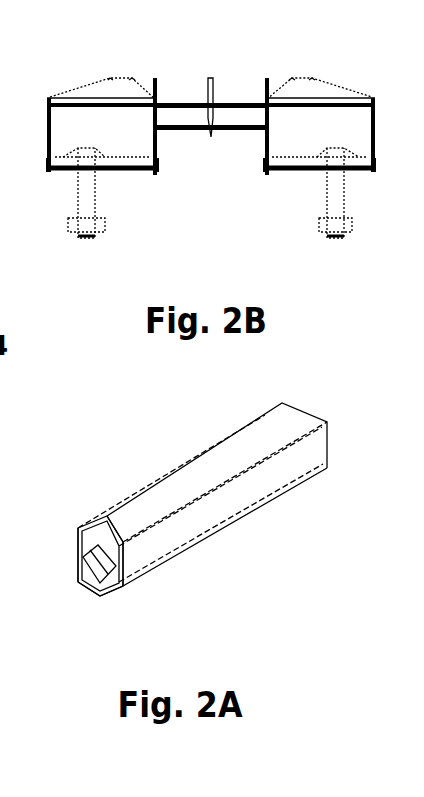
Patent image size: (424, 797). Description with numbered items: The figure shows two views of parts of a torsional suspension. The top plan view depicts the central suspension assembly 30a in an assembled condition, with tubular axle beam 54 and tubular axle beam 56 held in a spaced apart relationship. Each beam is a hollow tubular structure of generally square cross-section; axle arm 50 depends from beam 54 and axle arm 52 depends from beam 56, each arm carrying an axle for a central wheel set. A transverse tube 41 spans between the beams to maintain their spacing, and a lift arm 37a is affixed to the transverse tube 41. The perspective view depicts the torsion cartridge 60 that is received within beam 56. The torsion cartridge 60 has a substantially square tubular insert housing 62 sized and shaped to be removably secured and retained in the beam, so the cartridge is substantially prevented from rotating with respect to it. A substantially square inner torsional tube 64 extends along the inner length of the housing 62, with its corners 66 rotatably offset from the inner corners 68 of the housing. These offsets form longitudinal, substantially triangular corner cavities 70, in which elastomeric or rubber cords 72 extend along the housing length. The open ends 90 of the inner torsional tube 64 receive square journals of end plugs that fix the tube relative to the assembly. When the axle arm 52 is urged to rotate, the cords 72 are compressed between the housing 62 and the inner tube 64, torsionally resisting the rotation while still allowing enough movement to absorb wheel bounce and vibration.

In FIG. 2B, the central suspension assembly 30a is at (236, 156).
In FIG. 2B, the lift arm 37a is at (213, 80).
In FIG. 2B, the transverse tube 41 is at (187, 130).
In FIG. 2B, the axle arm 50 is at (88, 240).
In FIG. 2B, the axle arm 52 is at (327, 237).
In FIG. 2B, the tubular axle beam 54 is at (65, 167).
In FIG. 2B, the tubular axle beam 56 is at (324, 160).
In FIG. 2A, the torsion cartridge 60 is at (272, 544).
In FIG. 2A, the tubular insert housing 62 is at (80, 527).
In FIG. 2A, the inner torsional tube 64 is at (119, 569).
In FIG. 2A, the corners 66 is at (100, 592).
In FIG. 2A, the inner corners 68 is at (78, 582).
In FIG. 2A, the corner cavities 70 is at (123, 545).
In FIG. 2A, the cords 72 is at (115, 585).
In FIG. 2A, the open ends 90 is at (102, 567).